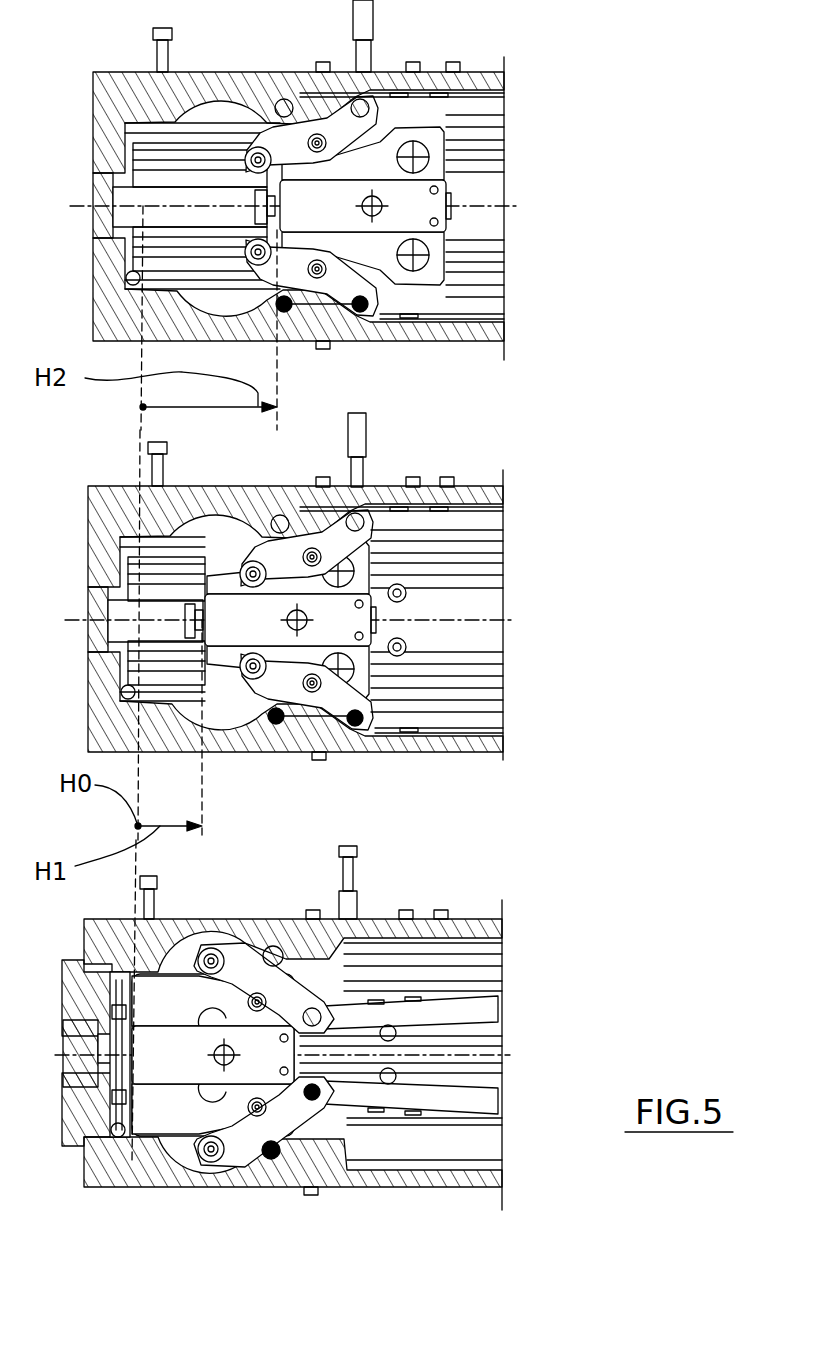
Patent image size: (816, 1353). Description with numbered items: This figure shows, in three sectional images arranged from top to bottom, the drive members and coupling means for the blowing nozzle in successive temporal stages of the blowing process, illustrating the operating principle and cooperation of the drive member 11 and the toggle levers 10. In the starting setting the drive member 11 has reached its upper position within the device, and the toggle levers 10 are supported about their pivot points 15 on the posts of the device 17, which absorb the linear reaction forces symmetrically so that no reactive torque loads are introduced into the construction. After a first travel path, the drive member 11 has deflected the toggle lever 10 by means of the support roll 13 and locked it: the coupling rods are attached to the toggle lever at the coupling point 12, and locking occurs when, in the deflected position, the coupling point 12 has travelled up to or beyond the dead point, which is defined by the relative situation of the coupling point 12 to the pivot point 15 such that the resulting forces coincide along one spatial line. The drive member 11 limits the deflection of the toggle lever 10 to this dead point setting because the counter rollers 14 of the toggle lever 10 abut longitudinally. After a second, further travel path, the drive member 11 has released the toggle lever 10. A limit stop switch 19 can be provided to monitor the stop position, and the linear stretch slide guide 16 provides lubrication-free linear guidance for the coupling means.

The toggle lever 10 is at (238, 1146).
The drive member 11 is at (153, 1122).
The coupling point 12 is at (372, 735).
The support roll 13 is at (310, 693).
The counter roller 14 is at (250, 680).
The pivot point 15 is at (274, 1160).
The linear stretch slide guide 16 is at (344, 1116).
The posts of the device 17 is at (416, 1188).
The limit stop switch 19 is at (357, 876).